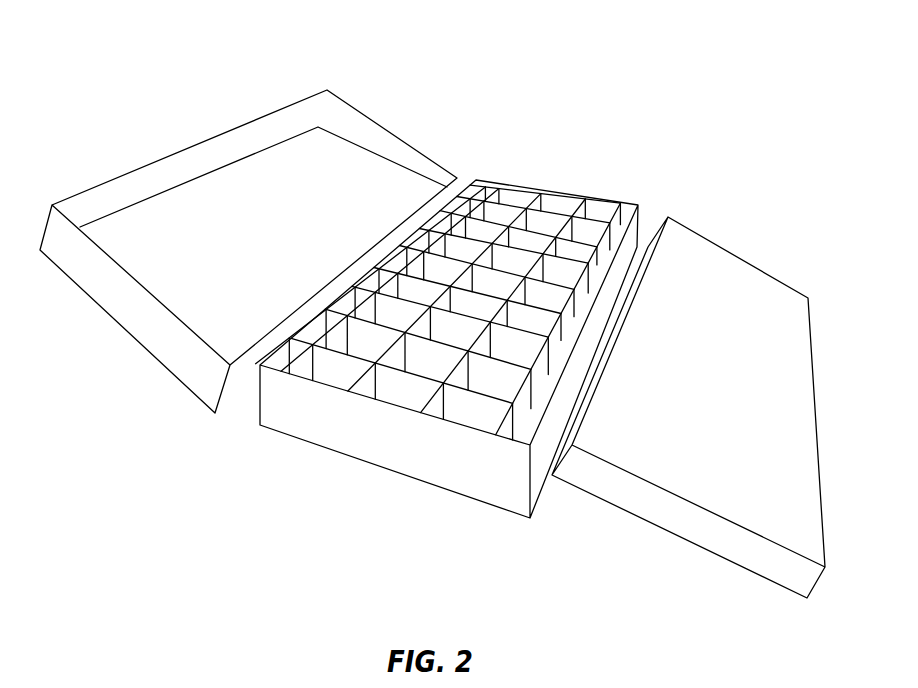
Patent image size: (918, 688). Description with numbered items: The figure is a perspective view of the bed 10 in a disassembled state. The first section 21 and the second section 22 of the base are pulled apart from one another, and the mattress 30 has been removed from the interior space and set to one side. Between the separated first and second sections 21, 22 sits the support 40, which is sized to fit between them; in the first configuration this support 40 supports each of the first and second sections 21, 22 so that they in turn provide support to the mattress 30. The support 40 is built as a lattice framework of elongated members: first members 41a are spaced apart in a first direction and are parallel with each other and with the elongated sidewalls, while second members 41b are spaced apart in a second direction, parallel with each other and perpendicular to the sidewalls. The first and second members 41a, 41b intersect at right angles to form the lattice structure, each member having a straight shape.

The bed 10 is at (738, 99).
The first section 21 is at (110, 283).
The second section 22 is at (495, 465).
The mattress 30 is at (763, 338).
The support 40 is at (469, 317).
The first members 41a is at (557, 227).
The second members 41b is at (500, 183).